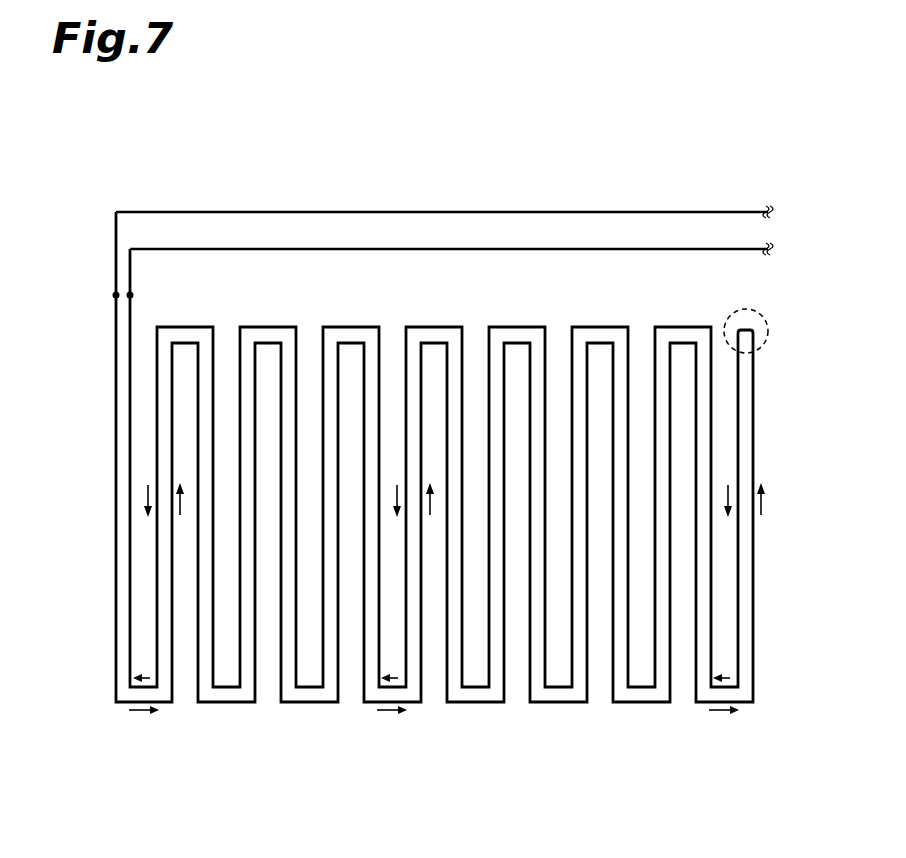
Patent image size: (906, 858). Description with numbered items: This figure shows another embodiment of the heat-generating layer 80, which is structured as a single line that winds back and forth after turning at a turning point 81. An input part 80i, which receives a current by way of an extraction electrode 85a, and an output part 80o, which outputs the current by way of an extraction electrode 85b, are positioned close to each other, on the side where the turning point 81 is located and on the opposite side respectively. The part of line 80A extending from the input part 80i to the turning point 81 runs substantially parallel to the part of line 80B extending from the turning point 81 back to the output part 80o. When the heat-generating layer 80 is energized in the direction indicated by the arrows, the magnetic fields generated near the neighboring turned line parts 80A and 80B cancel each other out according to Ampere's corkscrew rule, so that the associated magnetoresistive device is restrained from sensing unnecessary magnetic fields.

The heat-generating layer 80 is at (78, 739).
The part of line 80A is at (115, 362).
The part of line 80B is at (132, 330).
The input part 80i is at (106, 294).
The output part 80o is at (145, 294).
The turning point 81 is at (768, 332).
The extraction electrode 85a is at (497, 212).
The extraction electrode 85b is at (497, 252).